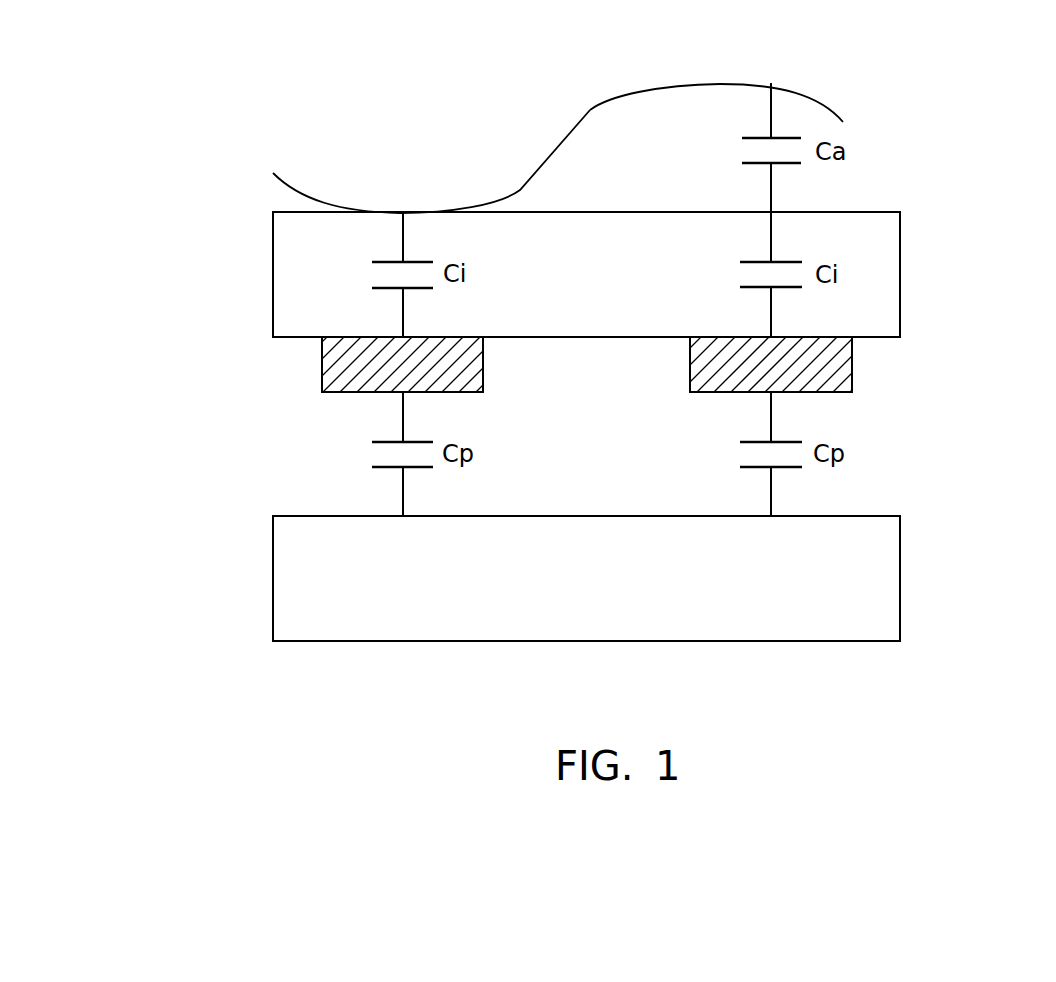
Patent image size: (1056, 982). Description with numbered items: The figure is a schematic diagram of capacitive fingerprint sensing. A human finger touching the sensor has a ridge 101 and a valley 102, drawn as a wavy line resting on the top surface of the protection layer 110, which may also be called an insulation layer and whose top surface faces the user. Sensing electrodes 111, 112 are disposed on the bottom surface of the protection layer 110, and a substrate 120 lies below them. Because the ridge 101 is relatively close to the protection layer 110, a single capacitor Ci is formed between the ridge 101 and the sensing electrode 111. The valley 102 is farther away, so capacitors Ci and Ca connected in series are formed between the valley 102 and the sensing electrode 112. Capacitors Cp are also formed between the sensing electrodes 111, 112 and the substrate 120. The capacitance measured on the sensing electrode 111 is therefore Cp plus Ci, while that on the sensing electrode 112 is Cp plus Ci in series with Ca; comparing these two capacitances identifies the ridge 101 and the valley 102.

The ridge 101 is at (327, 205).
The valley 102 is at (728, 83).
The protection layer 110 is at (877, 276).
The sensing electrode 111 is at (342, 365).
The sensing electrode 112 is at (832, 367).
The substrate 120 is at (877, 576).